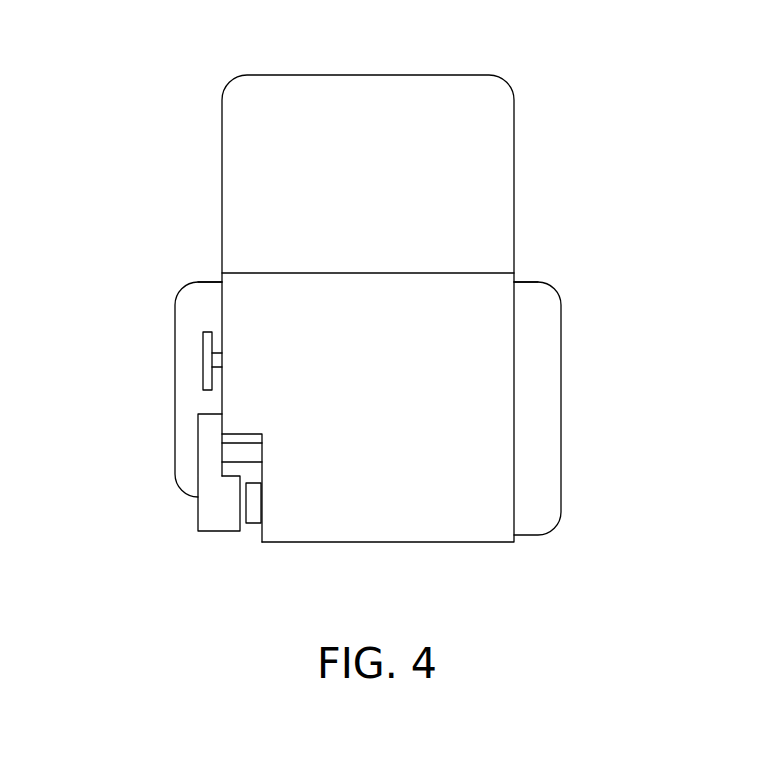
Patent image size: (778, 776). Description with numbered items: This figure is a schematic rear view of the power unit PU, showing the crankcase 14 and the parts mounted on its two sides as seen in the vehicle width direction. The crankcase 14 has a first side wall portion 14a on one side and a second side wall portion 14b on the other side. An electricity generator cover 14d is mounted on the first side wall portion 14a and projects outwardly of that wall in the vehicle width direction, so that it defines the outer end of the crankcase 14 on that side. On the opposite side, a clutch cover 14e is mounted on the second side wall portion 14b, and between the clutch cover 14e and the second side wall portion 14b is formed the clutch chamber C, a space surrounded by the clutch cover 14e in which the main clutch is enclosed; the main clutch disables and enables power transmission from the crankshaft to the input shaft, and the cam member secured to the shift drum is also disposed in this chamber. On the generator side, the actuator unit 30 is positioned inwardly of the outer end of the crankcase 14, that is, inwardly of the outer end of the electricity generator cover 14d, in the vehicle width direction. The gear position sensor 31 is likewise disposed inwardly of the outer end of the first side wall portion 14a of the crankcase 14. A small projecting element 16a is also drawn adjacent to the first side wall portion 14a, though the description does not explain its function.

The power unit PU is at (173, 157).
The crankcase 14 is at (412, 530).
The first side wall portion 14a is at (222, 300).
The second side wall portion 14b is at (514, 299).
The electricity generator cover 14d is at (175, 325).
The clutch cover 14e is at (561, 348).
The engagement protrusion 16a is at (203, 360).
The actuator unit 30 is at (197, 508).
The gear position sensor 31 is at (252, 525).
The clutch chamber C is at (537, 442).